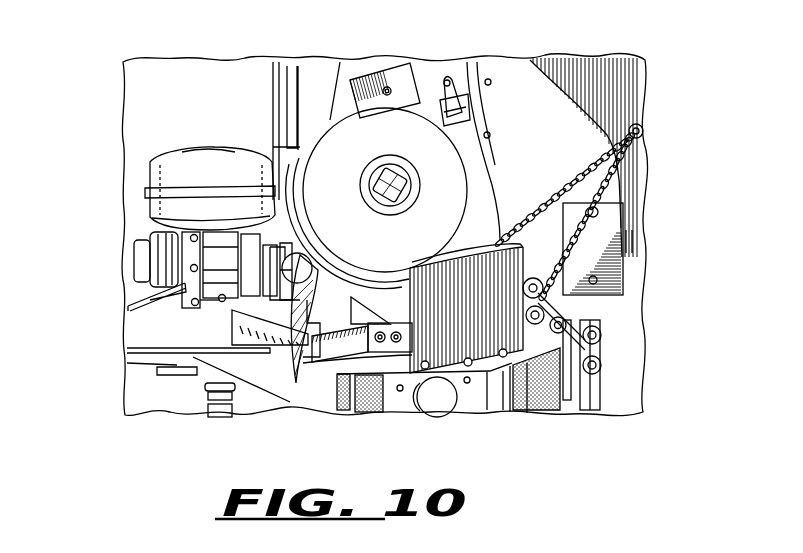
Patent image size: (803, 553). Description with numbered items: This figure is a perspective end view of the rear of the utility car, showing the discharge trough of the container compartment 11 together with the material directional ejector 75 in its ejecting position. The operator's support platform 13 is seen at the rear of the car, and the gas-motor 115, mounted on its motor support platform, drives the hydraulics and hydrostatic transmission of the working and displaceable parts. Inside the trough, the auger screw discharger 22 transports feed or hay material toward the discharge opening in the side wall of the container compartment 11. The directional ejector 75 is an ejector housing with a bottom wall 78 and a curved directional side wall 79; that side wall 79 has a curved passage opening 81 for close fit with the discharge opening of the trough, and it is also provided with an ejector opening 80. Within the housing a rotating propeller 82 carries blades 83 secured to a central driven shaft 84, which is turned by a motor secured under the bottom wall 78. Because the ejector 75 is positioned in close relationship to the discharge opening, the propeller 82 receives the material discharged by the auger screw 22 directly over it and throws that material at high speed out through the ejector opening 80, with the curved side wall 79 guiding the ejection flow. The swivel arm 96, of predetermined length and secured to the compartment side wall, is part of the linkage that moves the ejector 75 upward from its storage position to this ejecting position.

The container compartment 11 is at (568, 65).
The auger screw discharger 22 is at (352, 136).
The curved passage opening 81 is at (488, 173).
The material directional ejector 75 is at (493, 232).
The swivel arm 96 is at (604, 170).
The curved directional side wall 79 is at (625, 293).
The gas-motor 115 is at (150, 173).
The support platform 13 is at (143, 340).
The blades 83 is at (352, 358).
The rotating propeller 82 is at (349, 378).
The bottom wall 78 is at (400, 372).
The central driven shaft 84 is at (406, 323).
The ejector opening 80 is at (403, 303).